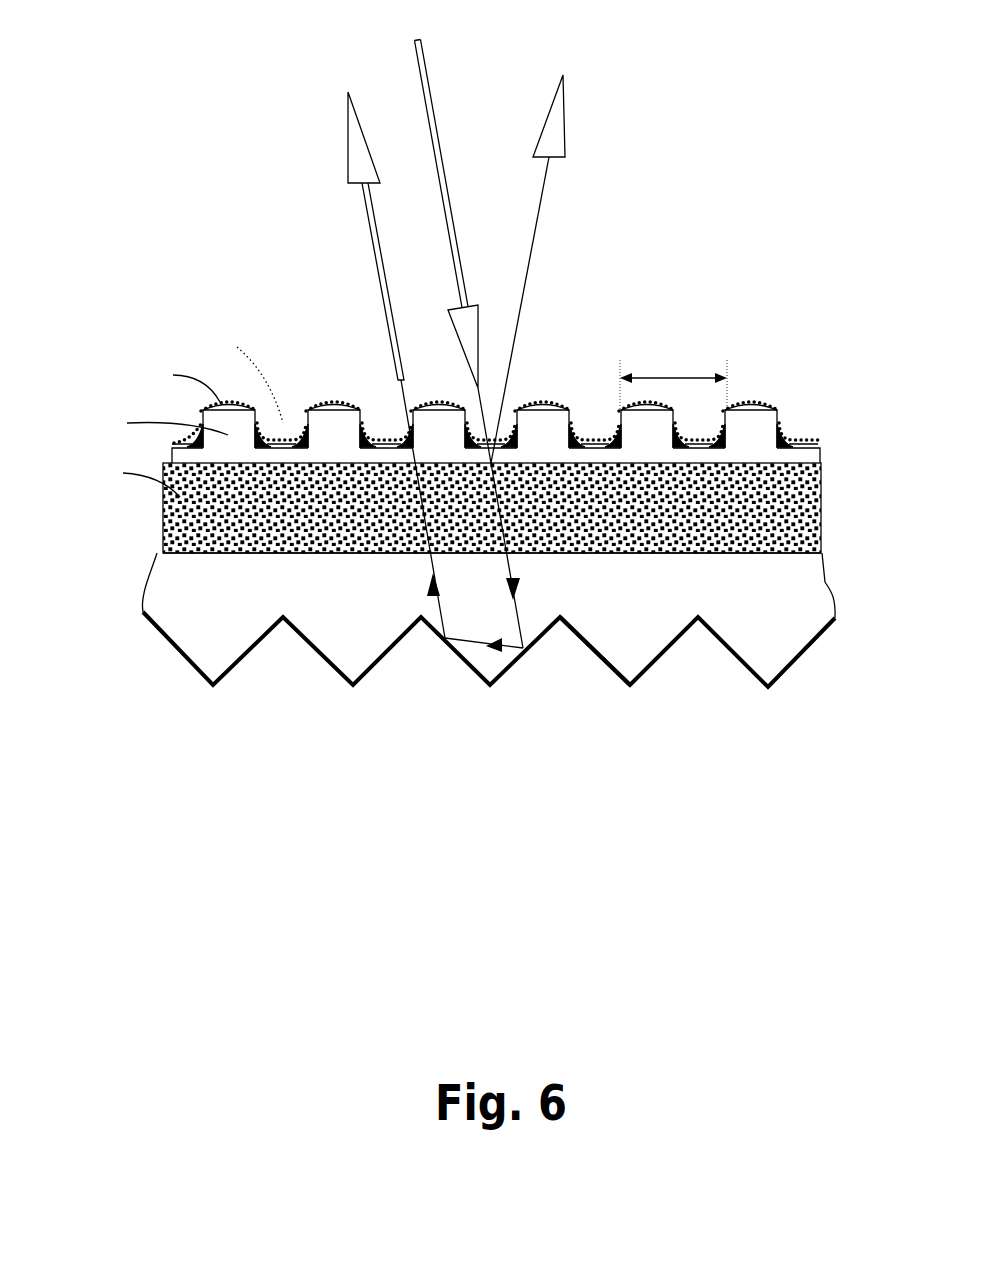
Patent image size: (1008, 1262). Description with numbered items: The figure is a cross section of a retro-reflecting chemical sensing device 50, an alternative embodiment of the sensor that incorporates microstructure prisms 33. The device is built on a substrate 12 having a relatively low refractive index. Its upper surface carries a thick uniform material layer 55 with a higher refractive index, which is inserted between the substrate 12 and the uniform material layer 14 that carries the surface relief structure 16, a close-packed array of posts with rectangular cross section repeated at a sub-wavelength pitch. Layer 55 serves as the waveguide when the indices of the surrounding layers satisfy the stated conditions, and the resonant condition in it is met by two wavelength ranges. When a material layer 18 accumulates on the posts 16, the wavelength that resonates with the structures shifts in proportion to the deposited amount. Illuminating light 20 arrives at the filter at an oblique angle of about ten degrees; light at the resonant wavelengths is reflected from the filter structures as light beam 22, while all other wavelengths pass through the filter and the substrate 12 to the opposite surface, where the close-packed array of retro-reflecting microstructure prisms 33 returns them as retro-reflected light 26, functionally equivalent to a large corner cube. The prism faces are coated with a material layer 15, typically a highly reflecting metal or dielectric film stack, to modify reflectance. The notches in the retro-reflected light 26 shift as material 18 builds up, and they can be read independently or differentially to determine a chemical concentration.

The substrate 12 is at (807, 582).
The uniform material layer 14 is at (807, 455).
The material layer 15 is at (797, 658).
The surface relief structure 16 is at (772, 420).
The material layer 18 is at (752, 400).
The illuminating light 20 is at (428, 63).
The light beam 22 is at (565, 125).
The retro-reflected light 26 is at (347, 150).
The retro-reflecting microstructure prisms 33 is at (628, 660).
The chemical sensing device 50 is at (134, 679).
The waveguide layer 55 is at (812, 522).